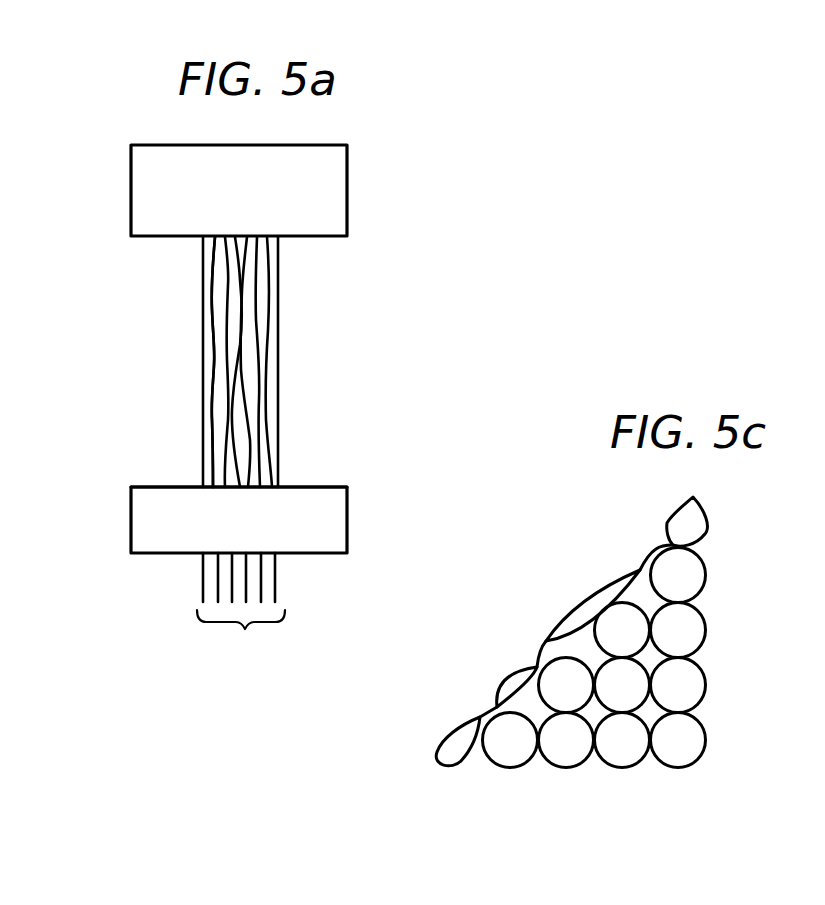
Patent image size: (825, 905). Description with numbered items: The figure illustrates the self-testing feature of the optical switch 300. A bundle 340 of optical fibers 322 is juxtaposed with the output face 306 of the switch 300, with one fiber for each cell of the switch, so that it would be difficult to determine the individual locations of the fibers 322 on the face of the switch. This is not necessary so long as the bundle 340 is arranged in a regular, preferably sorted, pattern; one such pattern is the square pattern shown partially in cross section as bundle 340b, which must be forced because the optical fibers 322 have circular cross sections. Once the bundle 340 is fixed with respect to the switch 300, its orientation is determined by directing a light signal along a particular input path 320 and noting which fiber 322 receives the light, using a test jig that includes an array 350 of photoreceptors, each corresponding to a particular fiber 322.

In FIG. 5A, the array of photoreceptors 350 is at (349, 187).
In FIG. 5A, the bundle of optical fibers 340 is at (281, 398).
In FIG. 5A, the optical fiber 322 is at (215, 413).
In FIG. 5C, the optical fiber 322 is at (698, 687).
In FIG. 5A, the output face 306 is at (302, 487).
In FIG. 5A, the optical switch 300 is at (349, 515).
In FIG. 5A, the input path 320 is at (245, 633).
In FIG. 5C, the square pattern bundle 340b is at (603, 575).